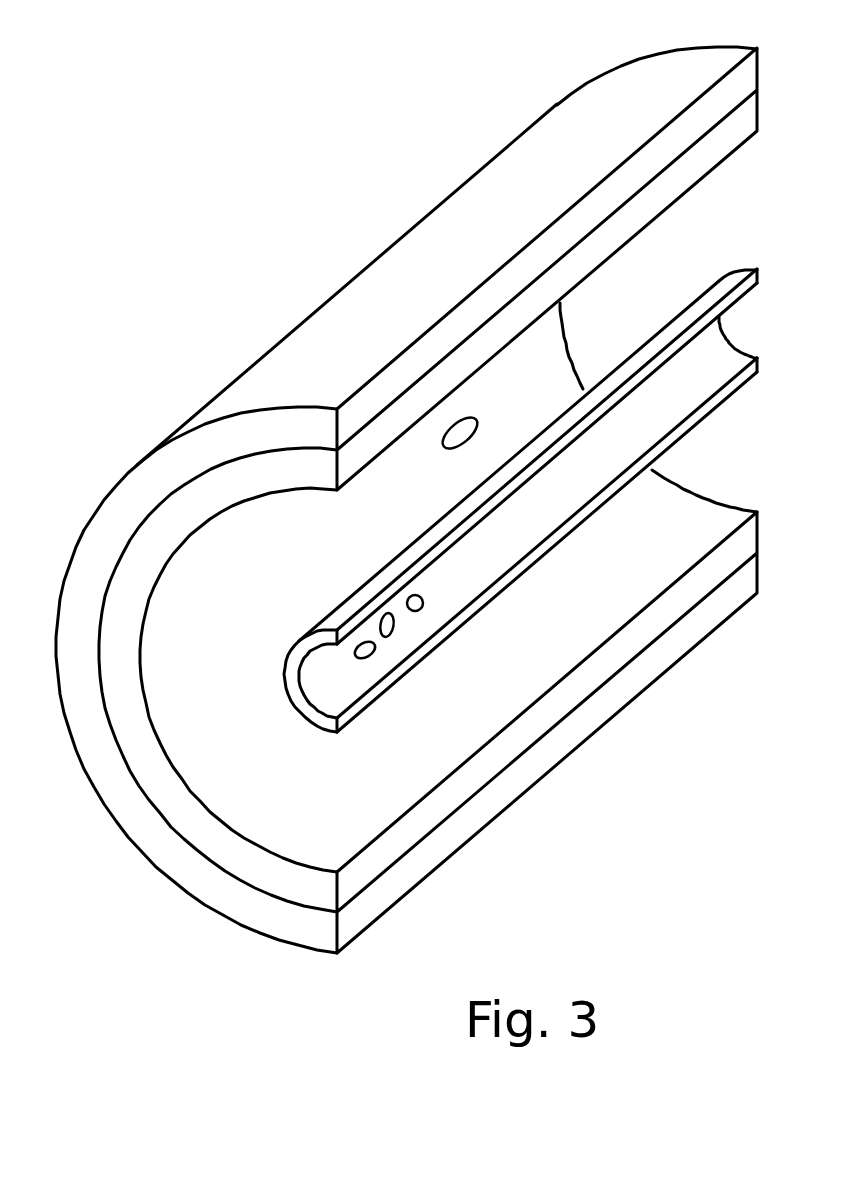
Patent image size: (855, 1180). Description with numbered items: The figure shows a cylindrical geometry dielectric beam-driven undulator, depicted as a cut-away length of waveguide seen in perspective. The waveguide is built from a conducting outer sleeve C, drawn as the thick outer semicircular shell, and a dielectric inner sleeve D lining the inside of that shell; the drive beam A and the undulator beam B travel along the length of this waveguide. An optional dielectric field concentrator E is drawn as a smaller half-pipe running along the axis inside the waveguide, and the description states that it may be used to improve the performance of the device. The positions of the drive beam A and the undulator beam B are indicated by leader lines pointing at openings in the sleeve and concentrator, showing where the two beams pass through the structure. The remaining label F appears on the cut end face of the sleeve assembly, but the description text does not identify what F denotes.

The drive beam A is at (458, 444).
The undulator beam B is at (381, 623).
The conducting outer sleeve C is at (365, 332).
The dielectric inner sleeve D is at (536, 300).
The dielectric field concentrator E is at (484, 606).
The inner face of shell F is at (238, 680).